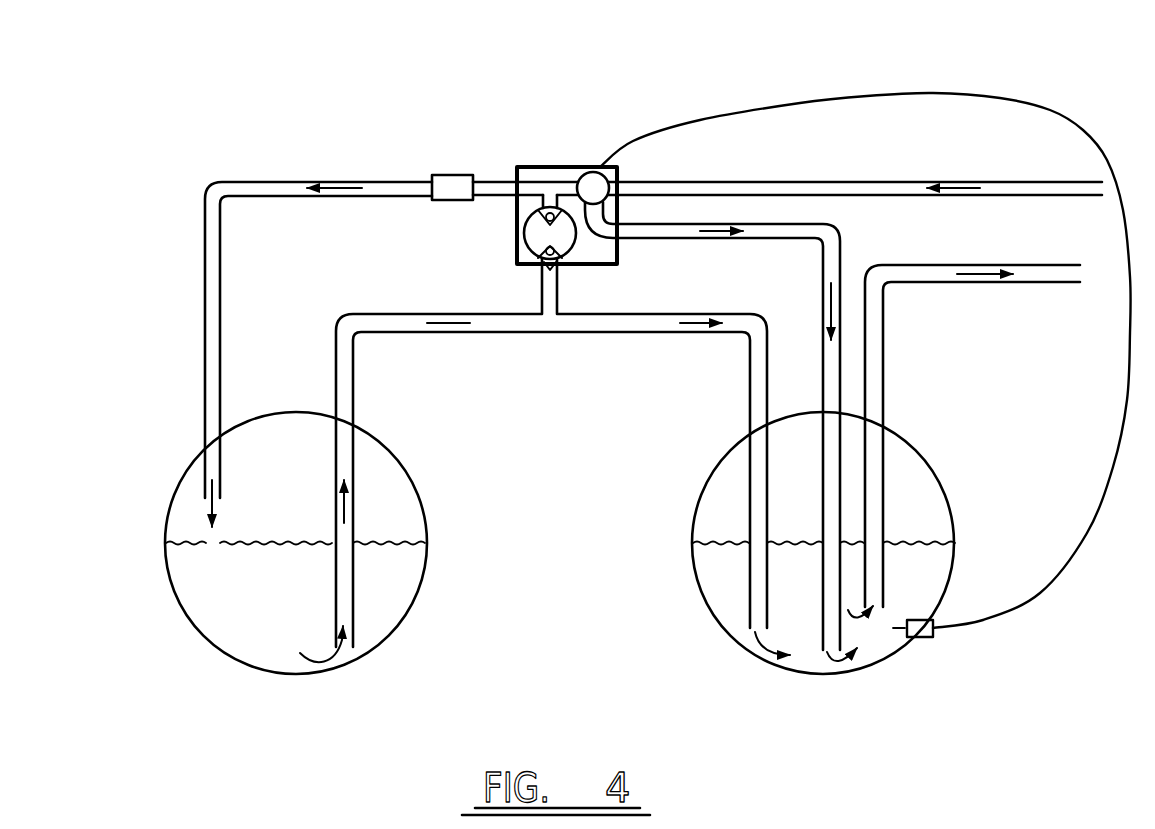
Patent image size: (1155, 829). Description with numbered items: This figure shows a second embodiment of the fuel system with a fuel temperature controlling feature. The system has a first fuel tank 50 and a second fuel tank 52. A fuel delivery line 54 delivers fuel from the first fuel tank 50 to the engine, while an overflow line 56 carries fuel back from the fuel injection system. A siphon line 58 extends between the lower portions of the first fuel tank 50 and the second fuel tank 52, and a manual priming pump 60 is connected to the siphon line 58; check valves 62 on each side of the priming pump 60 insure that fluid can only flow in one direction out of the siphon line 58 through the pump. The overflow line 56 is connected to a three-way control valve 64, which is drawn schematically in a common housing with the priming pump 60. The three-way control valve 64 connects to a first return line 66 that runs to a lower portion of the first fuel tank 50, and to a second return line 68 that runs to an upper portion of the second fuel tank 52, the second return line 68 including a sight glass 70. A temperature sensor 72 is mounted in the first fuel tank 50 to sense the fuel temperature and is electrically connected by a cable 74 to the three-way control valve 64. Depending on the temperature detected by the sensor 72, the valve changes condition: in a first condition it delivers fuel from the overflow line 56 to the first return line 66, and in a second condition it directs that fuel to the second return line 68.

The first fuel tank 50 is at (927, 453).
The second fuel tank 52 is at (373, 650).
The fuel delivery line 54 is at (885, 345).
The overflow line 56 is at (810, 180).
The siphon line 58 is at (353, 405).
The manual priming pump 60 is at (568, 240).
The check valves 62 is at (530, 253).
The three-way control valve 64 is at (587, 168).
The first return line 66 is at (840, 250).
The second return line 68 is at (200, 267).
The sight glass 70 is at (447, 177).
The temperature sensor 72 is at (920, 638).
The cable 74 is at (847, 97).